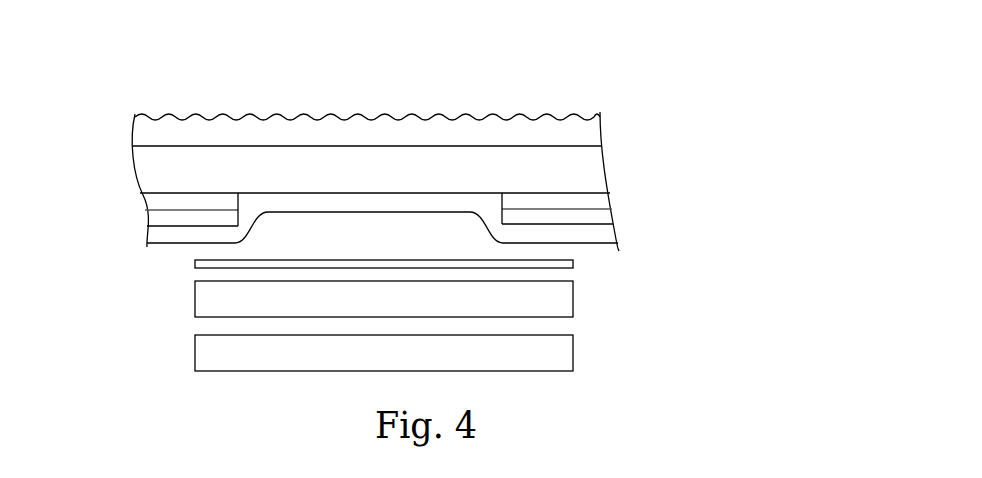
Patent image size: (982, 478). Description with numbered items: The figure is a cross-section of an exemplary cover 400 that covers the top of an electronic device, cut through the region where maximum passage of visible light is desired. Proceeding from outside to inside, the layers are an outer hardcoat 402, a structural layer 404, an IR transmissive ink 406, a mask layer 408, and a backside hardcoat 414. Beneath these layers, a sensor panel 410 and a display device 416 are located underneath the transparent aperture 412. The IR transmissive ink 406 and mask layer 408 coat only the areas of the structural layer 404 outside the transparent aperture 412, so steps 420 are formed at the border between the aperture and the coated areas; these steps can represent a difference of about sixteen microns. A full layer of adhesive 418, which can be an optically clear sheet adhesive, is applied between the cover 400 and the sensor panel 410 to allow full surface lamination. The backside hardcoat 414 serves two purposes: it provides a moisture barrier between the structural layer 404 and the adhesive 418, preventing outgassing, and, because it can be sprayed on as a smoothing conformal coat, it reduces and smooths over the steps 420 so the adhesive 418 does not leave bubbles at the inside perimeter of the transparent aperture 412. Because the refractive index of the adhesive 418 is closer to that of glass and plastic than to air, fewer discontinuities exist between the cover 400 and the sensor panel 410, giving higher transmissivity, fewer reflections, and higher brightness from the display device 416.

The cover 400 is at (138, 197).
The outer hardcoat 402 is at (584, 133).
The structural layer 404 is at (587, 173).
The IR transmissive ink 406 is at (593, 201).
The mask layer 408 is at (593, 217).
The sensor panel 410 is at (384, 299).
The transparent aperture 412 is at (383, 193).
The backside hardcoat 414 is at (601, 233).
The display device 416 is at (384, 353).
The adhesive 418 is at (573, 262).
The steps 420 is at (497, 200).